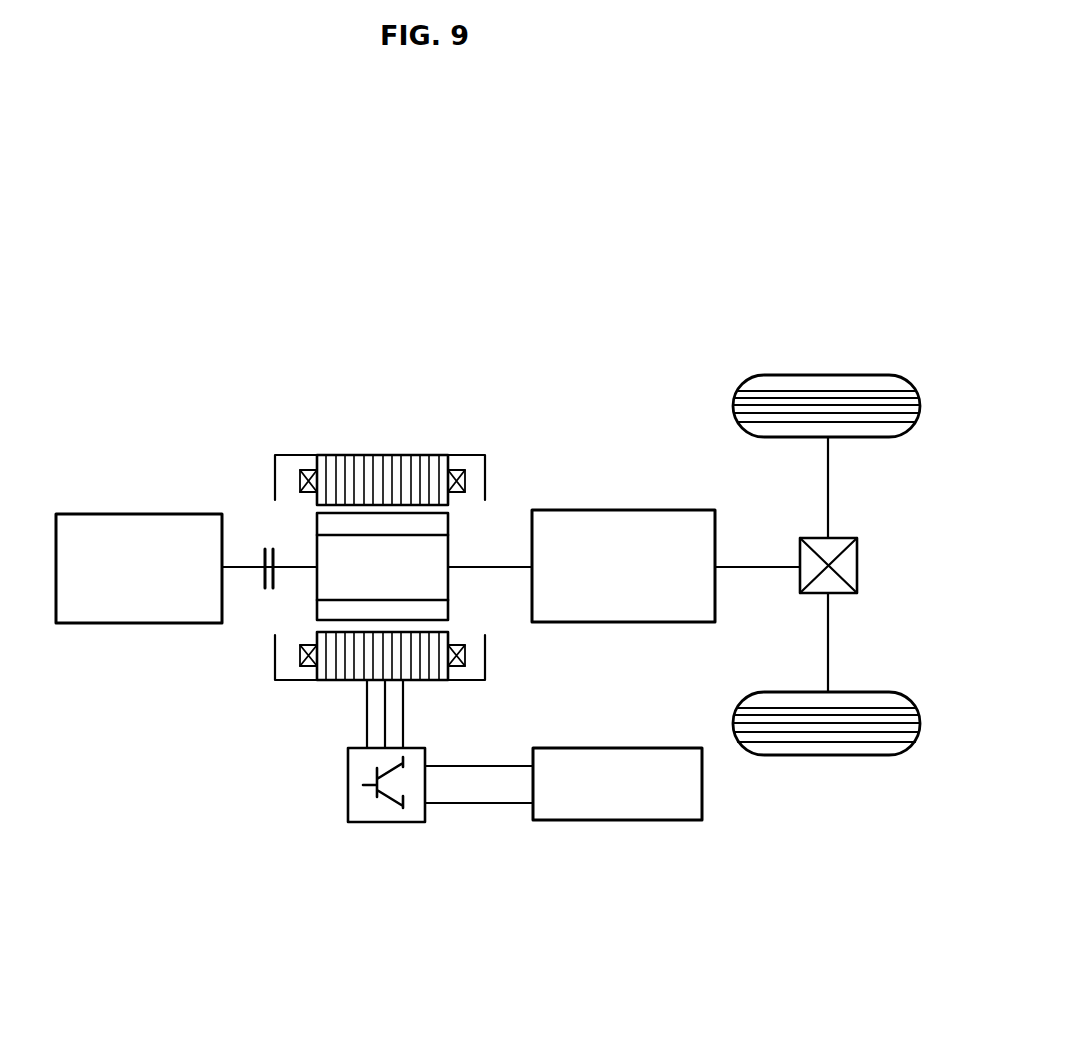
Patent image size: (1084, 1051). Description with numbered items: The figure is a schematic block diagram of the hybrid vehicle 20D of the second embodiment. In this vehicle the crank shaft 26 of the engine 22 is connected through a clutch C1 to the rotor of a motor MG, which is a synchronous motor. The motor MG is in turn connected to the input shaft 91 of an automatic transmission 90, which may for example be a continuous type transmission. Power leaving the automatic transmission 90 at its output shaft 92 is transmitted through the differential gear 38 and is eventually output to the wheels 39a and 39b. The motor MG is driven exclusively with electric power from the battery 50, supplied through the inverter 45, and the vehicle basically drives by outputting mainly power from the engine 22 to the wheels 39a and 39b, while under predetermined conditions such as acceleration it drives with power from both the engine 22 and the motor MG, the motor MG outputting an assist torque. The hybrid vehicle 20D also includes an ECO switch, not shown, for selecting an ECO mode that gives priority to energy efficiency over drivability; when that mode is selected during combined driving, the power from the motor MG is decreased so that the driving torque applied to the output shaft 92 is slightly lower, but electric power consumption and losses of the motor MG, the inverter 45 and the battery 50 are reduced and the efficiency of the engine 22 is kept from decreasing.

The hybrid vehicle 20D is at (511, 362).
The engine 22 is at (138, 513).
The crank shaft 26 is at (241, 569).
The clutch C1 is at (262, 545).
The motor MG is at (383, 453).
The automatic transmission 90 is at (617, 510).
The input shaft 91 is at (500, 567).
The output shaft 92 is at (747, 567).
The differential gear 38 is at (857, 564).
The wheel 39a is at (828, 757).
The wheel 39b is at (828, 374).
The inverter 45 is at (348, 778).
The battery 50 is at (617, 823).